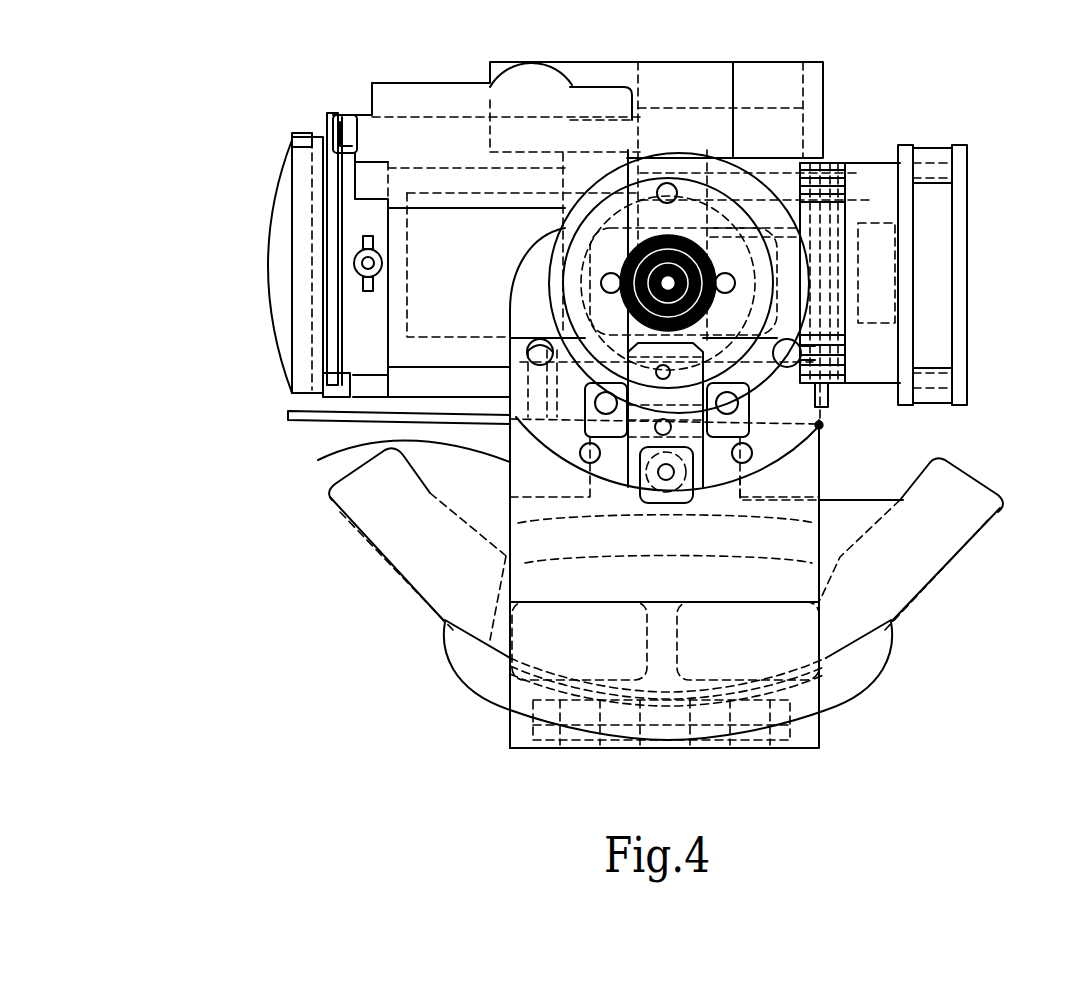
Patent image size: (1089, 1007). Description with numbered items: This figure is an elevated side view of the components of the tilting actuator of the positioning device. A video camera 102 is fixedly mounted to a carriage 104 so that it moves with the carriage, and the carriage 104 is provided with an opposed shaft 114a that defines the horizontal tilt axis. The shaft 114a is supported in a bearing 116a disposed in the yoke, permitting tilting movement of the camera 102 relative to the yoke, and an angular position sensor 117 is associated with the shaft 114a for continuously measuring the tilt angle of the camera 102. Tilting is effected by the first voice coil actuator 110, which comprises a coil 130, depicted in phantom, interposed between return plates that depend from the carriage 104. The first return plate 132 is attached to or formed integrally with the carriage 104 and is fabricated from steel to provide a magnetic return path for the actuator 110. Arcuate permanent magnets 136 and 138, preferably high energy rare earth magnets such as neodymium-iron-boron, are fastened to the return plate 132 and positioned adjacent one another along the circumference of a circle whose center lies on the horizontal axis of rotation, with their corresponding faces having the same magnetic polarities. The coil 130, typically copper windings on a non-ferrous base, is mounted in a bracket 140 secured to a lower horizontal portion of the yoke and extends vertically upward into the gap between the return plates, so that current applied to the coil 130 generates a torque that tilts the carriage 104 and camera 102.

The video camera 102 is at (312, 135).
The carriage 104 is at (340, 413).
The first voice coil actuator 110 is at (505, 452).
The shaft 114a is at (727, 272).
The bearing 116a is at (712, 235).
The angular position sensor 117 is at (675, 243).
The coil 130 is at (850, 672).
The first return plate 132 is at (847, 520).
The arcuate permanent magnet 136 is at (422, 553).
The arcuate permanent magnet 138 is at (920, 540).
The bracket 140 is at (785, 712).